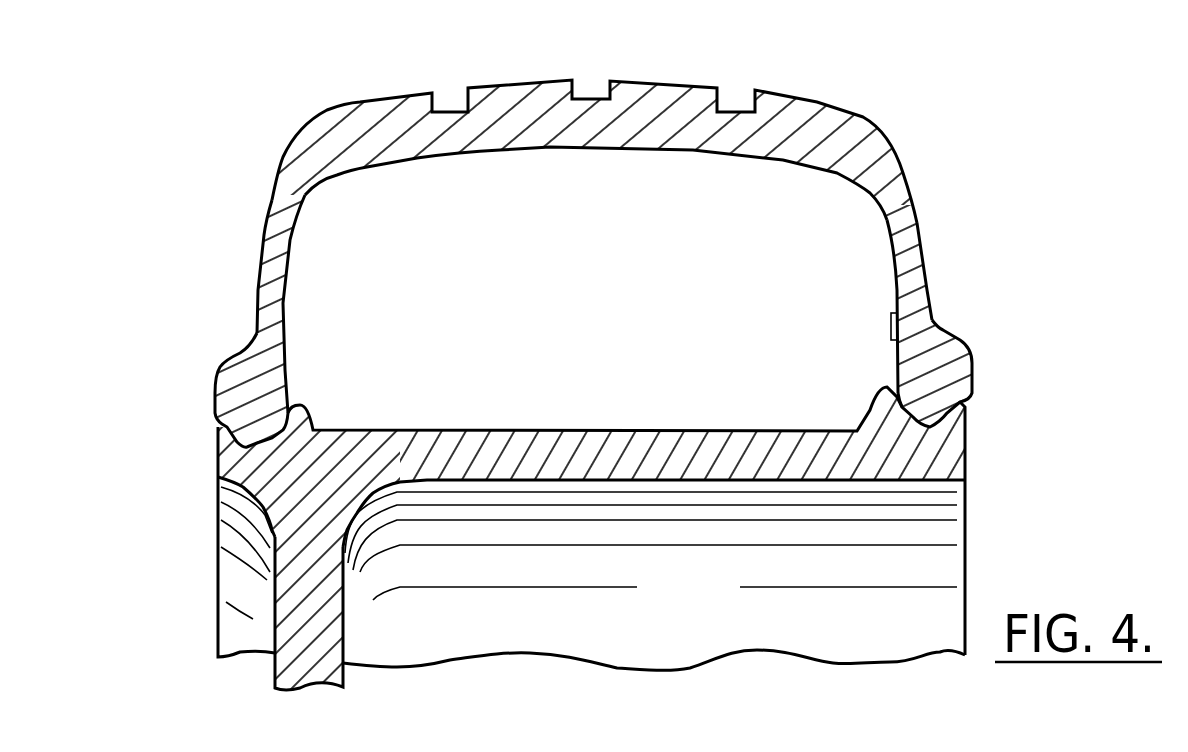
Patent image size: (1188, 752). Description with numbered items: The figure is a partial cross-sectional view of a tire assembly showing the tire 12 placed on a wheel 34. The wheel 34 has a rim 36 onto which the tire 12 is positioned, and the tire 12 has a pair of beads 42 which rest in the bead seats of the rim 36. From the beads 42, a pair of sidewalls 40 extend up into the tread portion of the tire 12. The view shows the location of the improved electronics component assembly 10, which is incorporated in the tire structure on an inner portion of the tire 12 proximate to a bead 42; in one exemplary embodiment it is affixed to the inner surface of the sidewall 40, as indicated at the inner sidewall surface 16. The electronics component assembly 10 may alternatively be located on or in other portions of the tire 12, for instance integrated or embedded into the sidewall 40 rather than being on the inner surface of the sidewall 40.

The electronics component assembly 10 is at (880, 336).
The tire 12 is at (665, 90).
The inner surface of tire 16 is at (283, 303).
The wheel 34 is at (305, 677).
The rim 36 is at (645, 470).
The sidewall 40 is at (267, 283).
The bead 42 is at (222, 397).